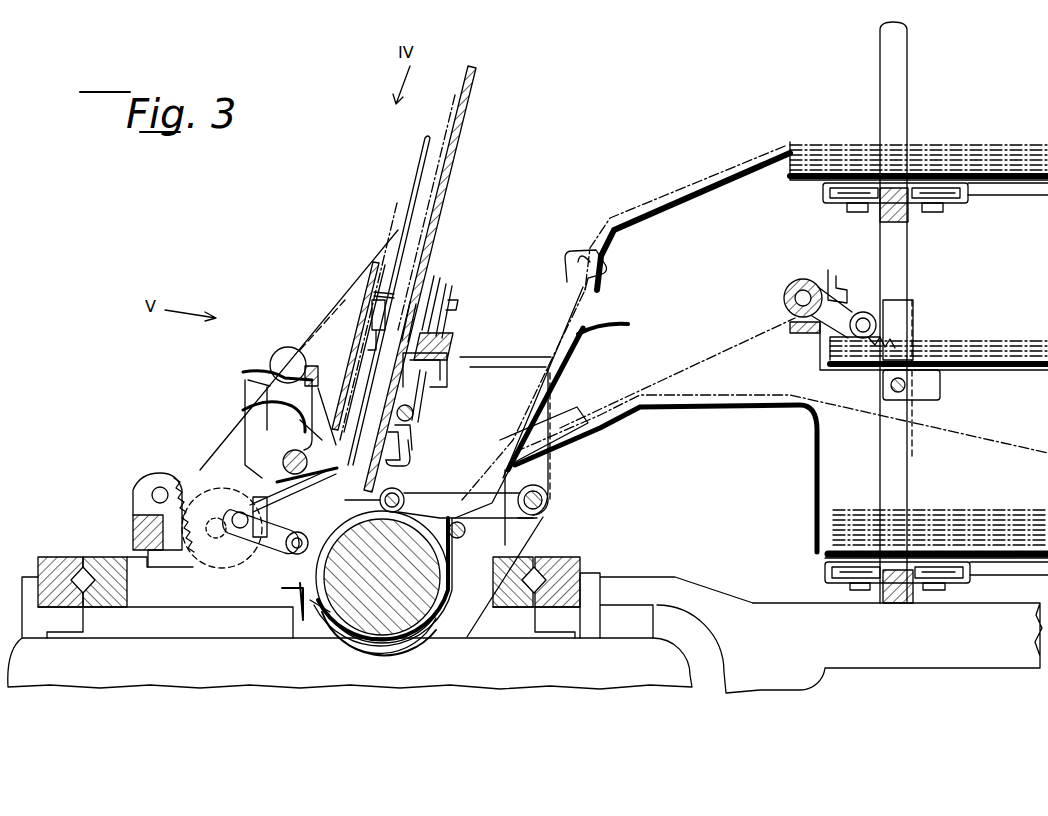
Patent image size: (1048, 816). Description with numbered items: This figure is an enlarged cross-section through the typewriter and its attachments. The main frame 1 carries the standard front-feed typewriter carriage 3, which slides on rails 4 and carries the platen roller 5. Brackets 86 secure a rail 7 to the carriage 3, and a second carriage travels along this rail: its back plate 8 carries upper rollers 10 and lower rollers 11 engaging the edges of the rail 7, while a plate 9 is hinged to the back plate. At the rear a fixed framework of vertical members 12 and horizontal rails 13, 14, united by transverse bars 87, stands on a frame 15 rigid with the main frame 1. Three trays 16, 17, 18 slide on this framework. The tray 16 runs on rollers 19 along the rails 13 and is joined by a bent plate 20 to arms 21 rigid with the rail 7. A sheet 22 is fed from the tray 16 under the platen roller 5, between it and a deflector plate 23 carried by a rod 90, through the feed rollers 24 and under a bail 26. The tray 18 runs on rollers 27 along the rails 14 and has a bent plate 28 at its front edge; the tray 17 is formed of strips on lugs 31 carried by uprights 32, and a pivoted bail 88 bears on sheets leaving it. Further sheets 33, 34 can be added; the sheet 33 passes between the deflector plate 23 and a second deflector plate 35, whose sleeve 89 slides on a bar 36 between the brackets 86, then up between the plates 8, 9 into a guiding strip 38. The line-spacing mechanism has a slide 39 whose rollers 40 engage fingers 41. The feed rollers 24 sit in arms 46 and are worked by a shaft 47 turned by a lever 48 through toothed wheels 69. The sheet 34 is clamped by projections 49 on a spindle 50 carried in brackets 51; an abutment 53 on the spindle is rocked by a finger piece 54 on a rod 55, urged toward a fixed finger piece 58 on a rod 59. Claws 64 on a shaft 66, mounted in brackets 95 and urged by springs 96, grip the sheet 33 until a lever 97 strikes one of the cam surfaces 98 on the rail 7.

The main frame 1 is at (28, 645).
The typewriter carriage 3 is at (133, 538).
The rails 4 is at (50, 560).
The platen roller 5 is at (372, 612).
The rail 7 is at (432, 342).
The back plate 8 is at (428, 290).
The plate 9 is at (370, 378).
The upper rollers 10 is at (451, 310).
The lower rollers 11 is at (418, 405).
The vertical members 12 is at (908, 270).
The horizontal rail 13 is at (908, 218).
The horizontal rail 14 is at (892, 604).
The frame 15 is at (903, 668).
The tray 16 is at (806, 180).
The tray 17 is at (858, 370).
The tray 18 is at (1014, 562).
The rollers 19 is at (846, 205).
The bent plate 20 is at (733, 192).
The arms 21 is at (573, 290).
The sheet 22 is at (740, 168).
The deflector plate 23 is at (455, 582).
The feed rollers 24 is at (296, 556).
The bail 26 is at (400, 490).
The rollers 27 is at (858, 590).
The bent plate 28 is at (800, 428).
The lugs 31 is at (940, 384).
The uprights 32 is at (914, 310).
The sheet 33 is at (458, 100).
The sheet 34 is at (388, 232).
The second deflector plate 35 is at (400, 645).
The bar 36 is at (545, 500).
The receiving and guiding strip 38 is at (470, 84).
The slide 39 is at (374, 292).
The rollers 40 is at (372, 318).
The fingers 41 is at (420, 160).
The arms 46 is at (262, 544).
The shaft 47 is at (160, 487).
The lever 48 is at (260, 390).
The projections 49 is at (330, 433).
The spindle 50 is at (310, 448).
The brackets 51 is at (299, 350).
The abutment 53 is at (286, 444).
The finger piece 54 is at (243, 410).
The rod 55 is at (288, 365).
The fixed finger piece 58 is at (256, 370).
The rod 59 is at (318, 380).
The claws 64 is at (410, 460).
The shaft 66 is at (412, 430).
The toothed wheels 69 is at (196, 487).
The brackets 86 is at (545, 402).
The transverse bars 87 is at (1018, 188).
The pivoted bail 88 is at (788, 290).
The sleeve 89 is at (546, 490).
The rod 90 is at (458, 538).
The brackets 95 is at (402, 445).
The springs 96 is at (414, 413).
The lever 97 is at (447, 382).
The cam surfaces 98 is at (452, 352).